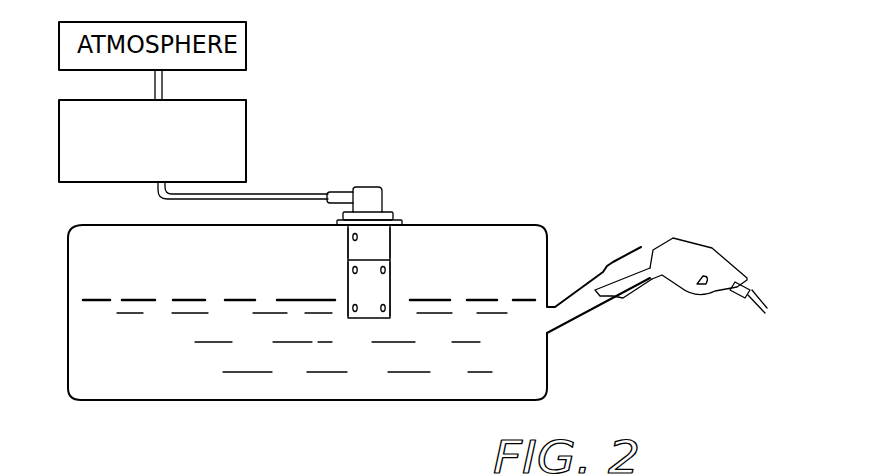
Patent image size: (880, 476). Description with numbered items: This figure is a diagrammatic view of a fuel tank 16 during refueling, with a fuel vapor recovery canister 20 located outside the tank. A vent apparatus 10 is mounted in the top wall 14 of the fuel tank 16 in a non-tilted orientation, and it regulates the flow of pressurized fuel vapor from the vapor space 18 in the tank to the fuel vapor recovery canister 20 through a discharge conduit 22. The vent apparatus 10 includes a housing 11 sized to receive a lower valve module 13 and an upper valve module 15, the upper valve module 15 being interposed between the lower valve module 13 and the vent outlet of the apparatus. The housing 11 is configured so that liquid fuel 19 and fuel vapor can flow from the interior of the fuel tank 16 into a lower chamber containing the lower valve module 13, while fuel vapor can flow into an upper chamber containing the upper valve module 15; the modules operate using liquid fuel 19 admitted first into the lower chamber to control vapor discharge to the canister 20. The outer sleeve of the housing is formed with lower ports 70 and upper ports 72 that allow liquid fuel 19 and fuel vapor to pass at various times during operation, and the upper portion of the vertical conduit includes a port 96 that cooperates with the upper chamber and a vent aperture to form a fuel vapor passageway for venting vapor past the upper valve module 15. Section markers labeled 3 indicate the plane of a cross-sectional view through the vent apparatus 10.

The vent apparatus 10 is at (296, 257).
The housing 11 is at (338, 291).
The lower valve module 13 is at (405, 275).
The top wall 14 is at (443, 225).
The upper valve module 15 is at (396, 241).
The fuel tank 16 is at (60, 355).
The vapor space 18 is at (88, 246).
The liquid fuel 19 is at (172, 359).
The fuel vapor recovery canister 20 is at (246, 145).
The discharge conduit 22 is at (278, 195).
The lower ports 70 is at (349, 318).
The upper ports 72 is at (350, 268).
The port 96 is at (350, 237).
The section line 3- 3 is at (328, 288).